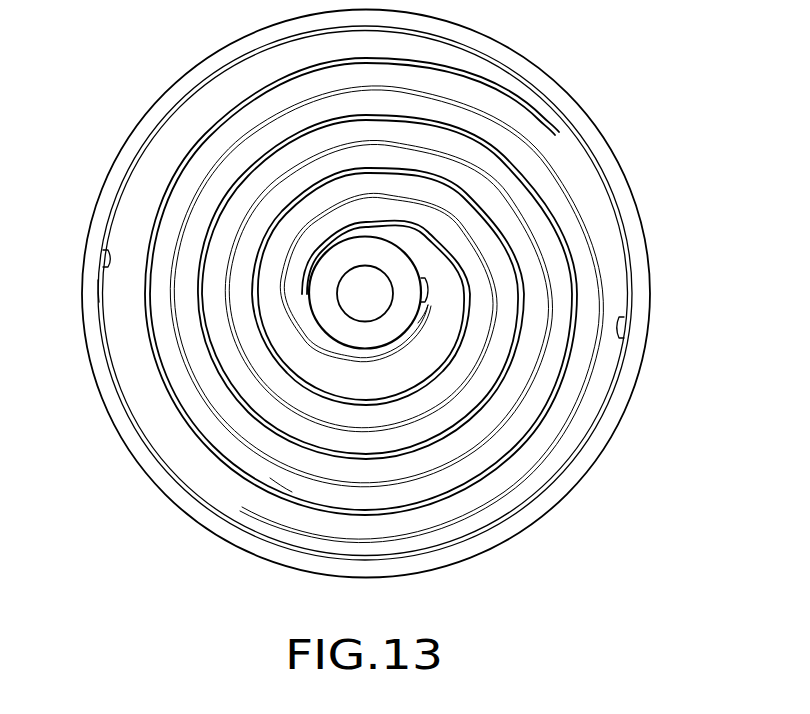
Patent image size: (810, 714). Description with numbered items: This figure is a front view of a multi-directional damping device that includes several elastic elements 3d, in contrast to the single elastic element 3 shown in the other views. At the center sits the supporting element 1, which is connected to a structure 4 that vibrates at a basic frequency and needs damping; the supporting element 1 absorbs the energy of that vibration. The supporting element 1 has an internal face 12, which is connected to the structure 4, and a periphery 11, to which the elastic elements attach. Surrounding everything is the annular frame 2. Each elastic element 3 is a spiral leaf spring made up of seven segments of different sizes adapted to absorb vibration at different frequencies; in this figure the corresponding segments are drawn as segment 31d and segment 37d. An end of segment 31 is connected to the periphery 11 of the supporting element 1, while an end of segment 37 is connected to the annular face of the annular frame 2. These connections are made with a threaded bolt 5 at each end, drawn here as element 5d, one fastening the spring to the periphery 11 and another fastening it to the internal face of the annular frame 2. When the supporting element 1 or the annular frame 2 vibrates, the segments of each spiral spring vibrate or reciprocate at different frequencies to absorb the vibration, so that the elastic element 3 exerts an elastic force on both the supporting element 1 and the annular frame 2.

The supporting element 1 is at (398, 313).
The annular frame 2 is at (160, 480).
The elastic element 3 is at (508, 468).
The elastic elements 3d is at (282, 472).
The structure 4 is at (358, 288).
The threaded bolt 5 is at (310, 300).
The threaded bolt 5d is at (108, 265).
The periphery 11 is at (380, 346).
The internal face 12 is at (345, 303).
The segment 31 is at (304, 284).
The segment 31d is at (430, 308).
The segment 37 is at (630, 309).
The segment 37d is at (100, 292).